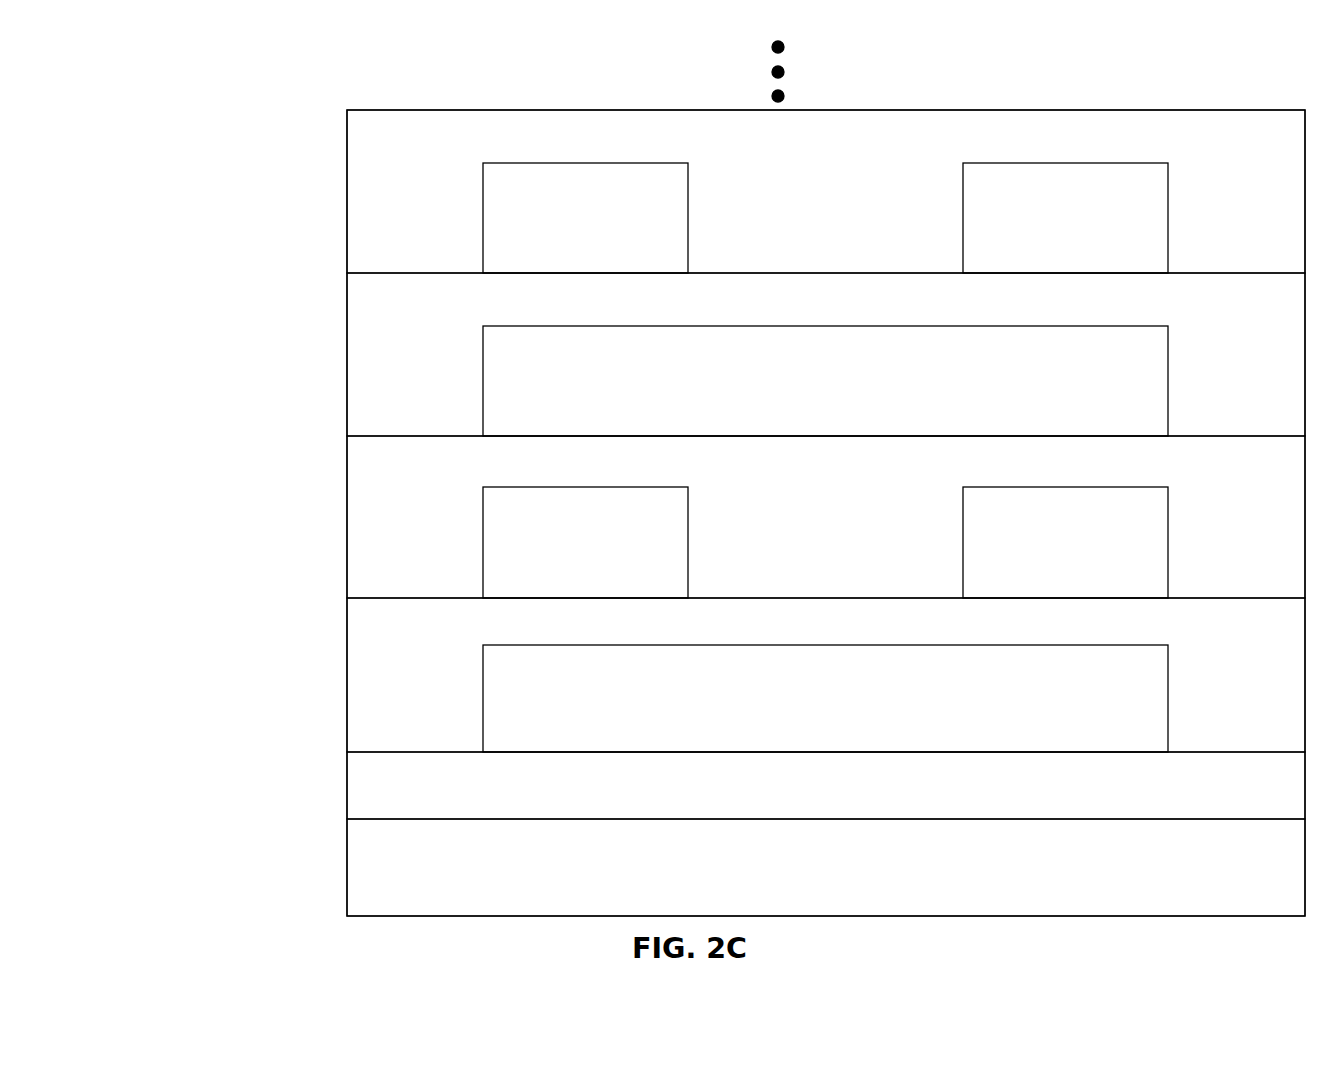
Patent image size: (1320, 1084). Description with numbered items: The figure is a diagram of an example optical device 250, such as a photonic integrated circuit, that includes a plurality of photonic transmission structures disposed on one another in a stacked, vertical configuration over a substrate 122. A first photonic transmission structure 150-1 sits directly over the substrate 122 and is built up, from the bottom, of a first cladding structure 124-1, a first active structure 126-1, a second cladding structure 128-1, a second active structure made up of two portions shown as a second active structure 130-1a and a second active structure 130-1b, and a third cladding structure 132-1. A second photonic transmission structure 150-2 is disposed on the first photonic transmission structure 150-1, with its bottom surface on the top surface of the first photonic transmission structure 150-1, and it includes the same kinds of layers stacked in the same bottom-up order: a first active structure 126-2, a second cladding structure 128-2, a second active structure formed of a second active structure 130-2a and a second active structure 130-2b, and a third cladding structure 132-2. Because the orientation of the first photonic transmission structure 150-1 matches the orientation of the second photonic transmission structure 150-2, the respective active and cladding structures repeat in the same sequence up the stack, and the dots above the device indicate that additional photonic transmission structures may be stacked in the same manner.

The optical device 250 is at (203, 70).
The second photonic transmission structure 150-2 is at (340, 110).
The first photonic transmission structure 150-1 is at (340, 436).
The third cladding structure 132-2 is at (826, 191).
The second active structure 130-2a is at (670, 243).
The second active structure 130-2b is at (1148, 243).
The second cladding structure 128-2 is at (990, 305).
The first active structure 126-2 is at (960, 393).
The third cladding structure 132-1 is at (826, 517).
The second active structure 130-1a is at (670, 567).
The second active structure 130-1b is at (1148, 567).
The second cladding structure 128-1 is at (990, 631).
The first active structure 126-1 is at (960, 712).
The first cladding structure 124-1 is at (972, 797).
The substrate 122 is at (897, 875).